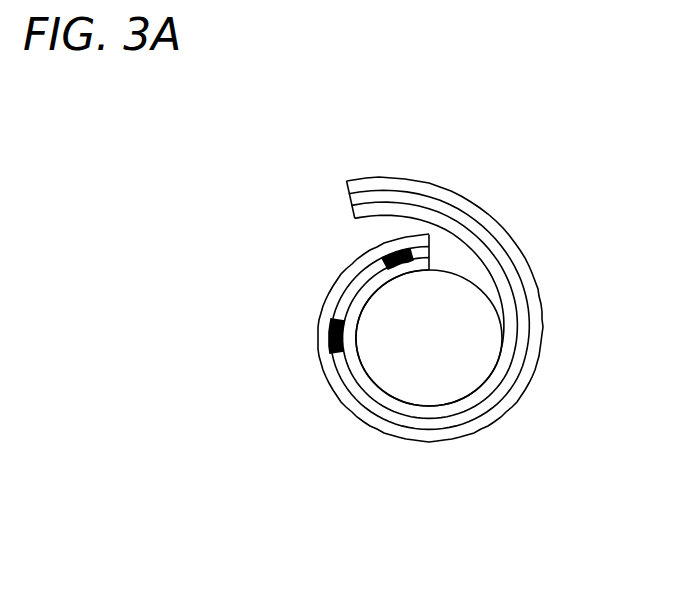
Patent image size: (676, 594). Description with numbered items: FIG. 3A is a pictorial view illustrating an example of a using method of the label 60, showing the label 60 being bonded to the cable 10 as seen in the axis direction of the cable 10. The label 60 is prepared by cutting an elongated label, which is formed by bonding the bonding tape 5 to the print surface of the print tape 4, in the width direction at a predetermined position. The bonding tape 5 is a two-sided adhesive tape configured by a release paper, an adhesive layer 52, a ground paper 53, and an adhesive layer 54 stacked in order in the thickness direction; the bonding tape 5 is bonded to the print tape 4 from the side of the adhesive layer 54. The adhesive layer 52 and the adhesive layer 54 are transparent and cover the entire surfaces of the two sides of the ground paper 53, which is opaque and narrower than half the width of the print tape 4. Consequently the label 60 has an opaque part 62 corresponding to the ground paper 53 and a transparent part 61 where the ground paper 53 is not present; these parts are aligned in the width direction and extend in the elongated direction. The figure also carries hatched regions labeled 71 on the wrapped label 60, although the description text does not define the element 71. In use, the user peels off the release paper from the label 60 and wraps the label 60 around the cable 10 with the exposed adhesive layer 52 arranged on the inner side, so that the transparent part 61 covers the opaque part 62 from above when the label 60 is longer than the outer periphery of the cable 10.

The cable 10 is at (448, 358).
The print tape 4 is at (350, 270).
The bonding tape 5 is at (425, 460).
The adhesive layer 52 is at (365, 376).
The ground paper 53 is at (415, 272).
The adhesive layer 54 is at (346, 307).
The label 60 is at (548, 200).
The transparent part 61 is at (332, 432).
The opaque part 62 is at (383, 238).
The electrode portion 71 is at (402, 246).